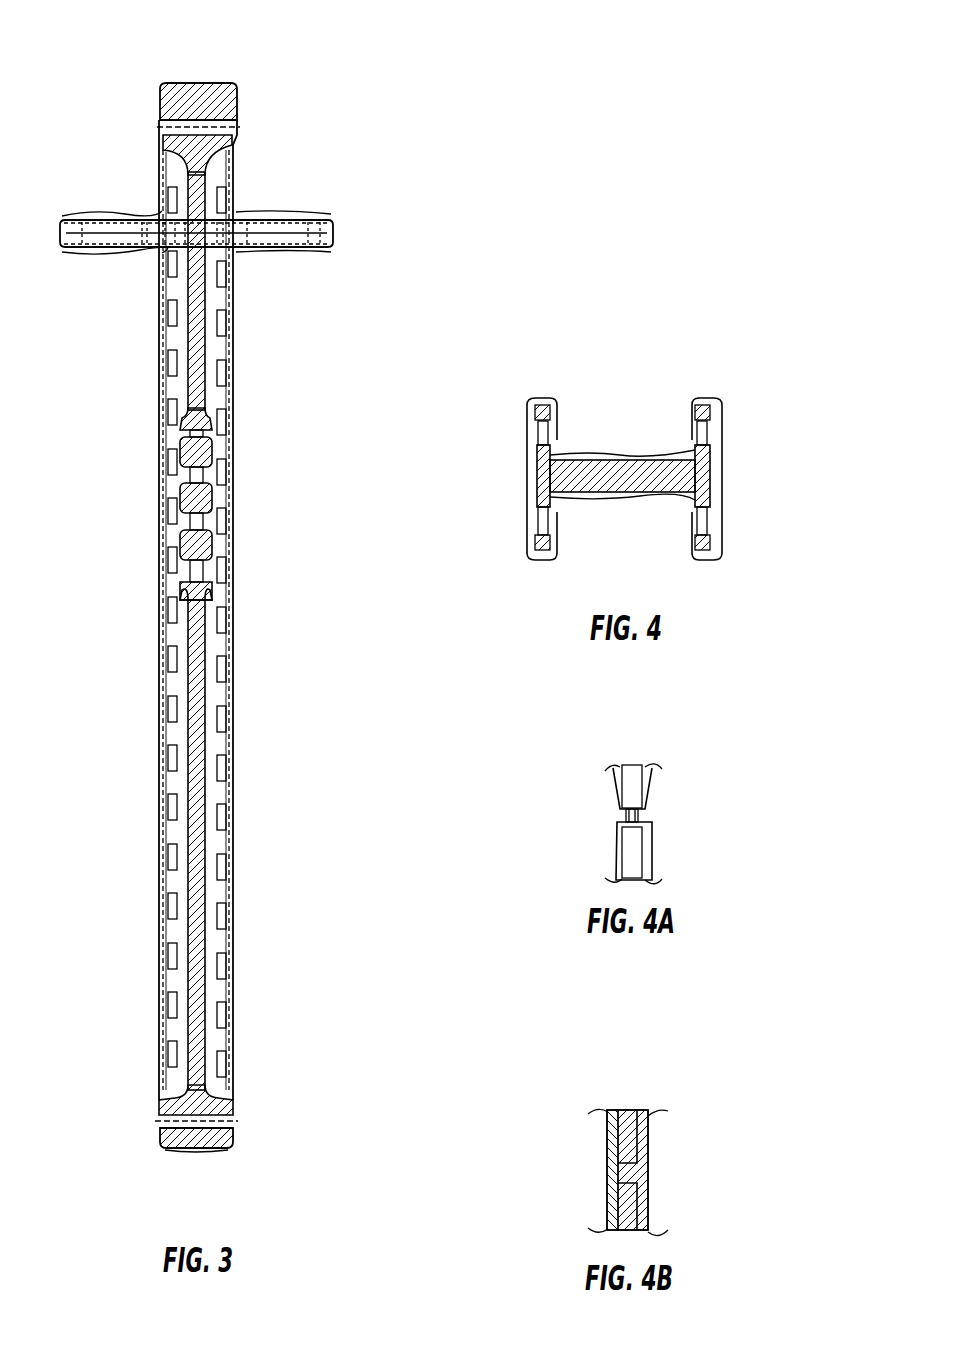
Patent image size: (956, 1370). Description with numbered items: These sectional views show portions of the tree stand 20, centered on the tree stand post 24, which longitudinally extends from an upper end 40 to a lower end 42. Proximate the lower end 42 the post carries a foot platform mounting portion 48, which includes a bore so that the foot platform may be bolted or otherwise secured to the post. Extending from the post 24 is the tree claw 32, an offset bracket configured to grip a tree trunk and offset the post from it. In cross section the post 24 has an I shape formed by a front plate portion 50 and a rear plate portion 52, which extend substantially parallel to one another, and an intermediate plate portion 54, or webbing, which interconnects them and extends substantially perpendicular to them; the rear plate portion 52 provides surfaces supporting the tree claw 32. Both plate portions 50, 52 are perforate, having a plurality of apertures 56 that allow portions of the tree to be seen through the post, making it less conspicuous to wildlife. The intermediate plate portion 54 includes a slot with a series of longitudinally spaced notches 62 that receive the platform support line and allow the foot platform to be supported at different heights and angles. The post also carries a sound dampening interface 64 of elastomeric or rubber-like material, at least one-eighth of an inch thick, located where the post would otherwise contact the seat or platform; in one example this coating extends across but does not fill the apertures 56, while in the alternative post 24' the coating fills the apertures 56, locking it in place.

In FIG. 3, the tree stand 20 is at (176, 58).
In FIG. 3, the tree stand post 24 is at (147, 568).
In FIG. 4A, the tree stand post 24 is at (674, 778).
In FIG. 4B, the post (alternative example) 24' is at (651, 1127).
In FIG. 3, the tree claw 32 is at (300, 216).
In FIG. 3, the upper end 40 is at (222, 77).
In FIG. 3, the lower end 42 is at (196, 1155).
In FIG. 3, the foot platform mounting portion 48 is at (230, 1150).
In FIG. 4, the front plate portion 50 is at (718, 521).
In FIG. 3, the rear plate portion 52 is at (162, 783).
In FIG. 4, the rear plate portion 52 is at (535, 542).
In FIG. 4A, the rear plate portion 52 is at (632, 860).
In FIG. 4B, the rear plate portion 52 is at (623, 1205).
In FIG. 3, the intermediate plate portion 54 is at (190, 706).
In FIG. 4, the intermediate plate portion 54 is at (593, 458).
In FIG. 3, the apertures 56 is at (222, 490).
In FIG. 4, the apertures 56 is at (531, 428).
In FIG. 4A, the apertures 56 is at (645, 815).
In FIG. 4B, the apertures 56 is at (650, 1163).
In FIG. 3, the notches 62 is at (190, 526).
In FIG. 3, the sound dampening interface 64 is at (238, 298).
In FIG. 4, the sound dampening interface 64 is at (723, 453).